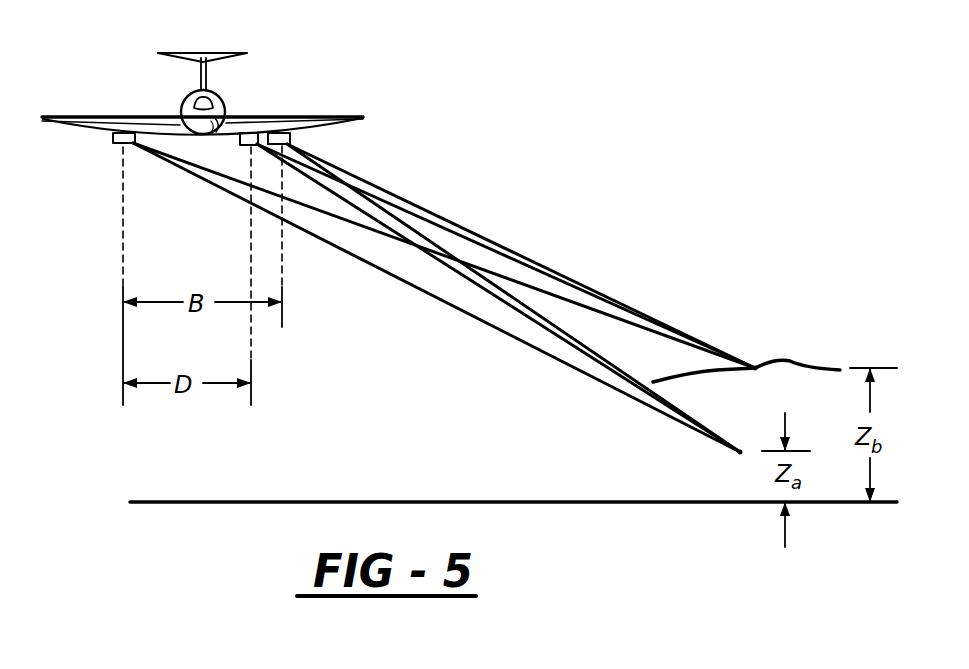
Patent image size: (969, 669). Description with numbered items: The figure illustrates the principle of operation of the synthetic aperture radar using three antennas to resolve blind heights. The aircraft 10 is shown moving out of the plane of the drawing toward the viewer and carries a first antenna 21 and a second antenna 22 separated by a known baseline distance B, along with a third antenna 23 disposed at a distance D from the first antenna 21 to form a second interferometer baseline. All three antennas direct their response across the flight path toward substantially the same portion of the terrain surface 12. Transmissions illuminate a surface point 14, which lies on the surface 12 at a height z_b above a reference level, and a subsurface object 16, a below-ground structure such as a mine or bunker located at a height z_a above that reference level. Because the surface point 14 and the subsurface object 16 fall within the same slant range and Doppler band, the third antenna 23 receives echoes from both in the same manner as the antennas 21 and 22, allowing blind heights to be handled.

The aircraft 10 is at (186, 96).
The terrain surface 12 is at (808, 362).
The surface point 14 is at (757, 366).
The subsurface object 16 is at (741, 455).
The first synthetic aperture radar antenna 21 is at (113, 138).
The second synthetic aperture radar antenna 22 is at (292, 138).
The third antenna 23 is at (243, 143).